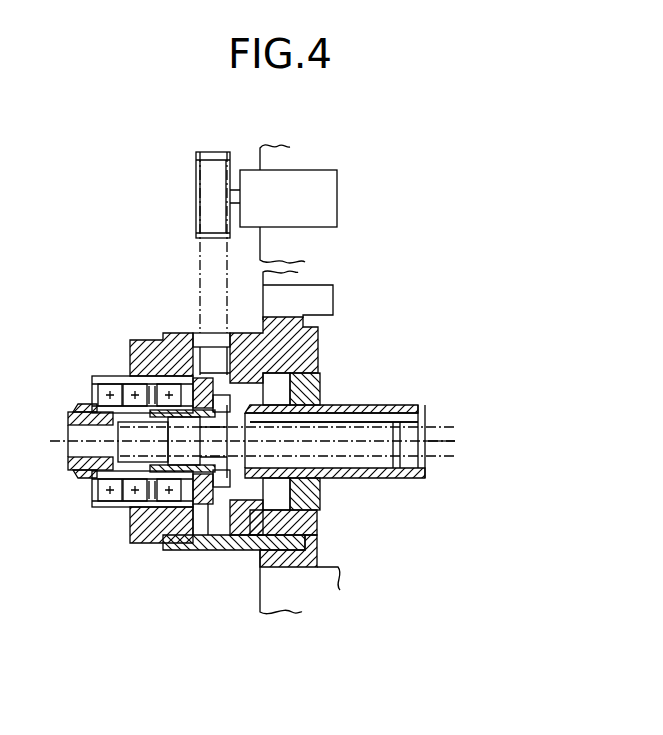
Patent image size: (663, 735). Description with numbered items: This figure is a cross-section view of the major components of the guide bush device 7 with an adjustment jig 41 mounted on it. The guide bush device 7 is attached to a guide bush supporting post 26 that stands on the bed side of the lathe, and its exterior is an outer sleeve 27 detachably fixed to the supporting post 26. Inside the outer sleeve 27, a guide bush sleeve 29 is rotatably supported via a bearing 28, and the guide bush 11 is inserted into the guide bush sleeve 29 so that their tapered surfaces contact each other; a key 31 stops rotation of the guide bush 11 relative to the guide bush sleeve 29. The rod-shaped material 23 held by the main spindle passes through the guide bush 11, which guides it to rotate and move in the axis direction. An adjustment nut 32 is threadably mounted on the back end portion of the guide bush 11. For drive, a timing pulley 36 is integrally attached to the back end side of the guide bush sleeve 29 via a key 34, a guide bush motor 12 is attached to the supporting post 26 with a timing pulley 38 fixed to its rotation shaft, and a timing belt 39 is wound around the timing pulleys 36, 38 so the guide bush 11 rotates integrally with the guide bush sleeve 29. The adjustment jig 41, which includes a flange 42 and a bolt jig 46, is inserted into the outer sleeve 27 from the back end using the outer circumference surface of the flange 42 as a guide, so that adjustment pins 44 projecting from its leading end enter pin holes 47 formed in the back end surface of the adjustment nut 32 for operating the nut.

The guide bush device 7 is at (143, 545).
The guide bush 11 is at (93, 465).
The guide bush motor 12 is at (323, 180).
The rod-shaped material 23 is at (440, 455).
The guide bush supporting post 26 is at (277, 572).
The outer sleeve 27 is at (170, 520).
The bearing 28 is at (160, 384).
The guide bush sleeve 29 is at (75, 477).
The key 31 is at (83, 410).
The adjustment nut 32 is at (160, 505).
The key 34 is at (188, 400).
The timing pulley 36 is at (212, 392).
The timing pulley 38 is at (230, 168).
The timing belt 39 is at (200, 268).
The adjustment jig 41 is at (373, 405).
The flange 42 is at (312, 392).
The adjustment pins 44 is at (297, 467).
The bolt jig 46 is at (385, 417).
The pin holes 47 is at (240, 515).